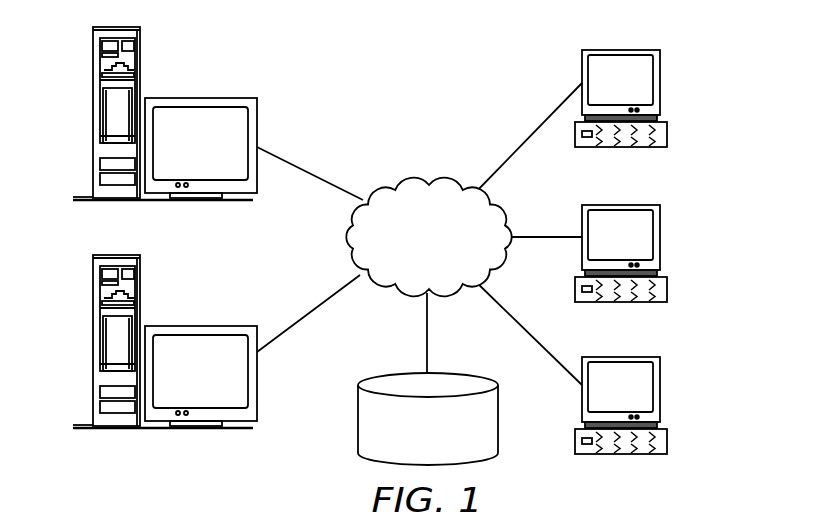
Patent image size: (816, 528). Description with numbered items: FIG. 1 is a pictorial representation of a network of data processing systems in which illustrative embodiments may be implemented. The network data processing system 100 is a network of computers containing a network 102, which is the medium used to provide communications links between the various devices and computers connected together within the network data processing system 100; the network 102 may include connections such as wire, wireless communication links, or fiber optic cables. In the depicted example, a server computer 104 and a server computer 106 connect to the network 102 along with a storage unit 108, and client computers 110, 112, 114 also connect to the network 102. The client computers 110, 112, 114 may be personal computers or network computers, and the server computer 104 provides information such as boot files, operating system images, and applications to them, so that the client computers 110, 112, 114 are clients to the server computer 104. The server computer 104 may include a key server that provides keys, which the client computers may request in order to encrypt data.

The network data processing system 100 is at (486, 66).
The network 102 is at (402, 185).
The server computer 104 is at (93, 113).
The server computer 106 is at (93, 338).
The storage unit 108 is at (358, 430).
The client computer 110 is at (660, 82).
The client computer 112 is at (660, 237).
The client computer 114 is at (660, 388).